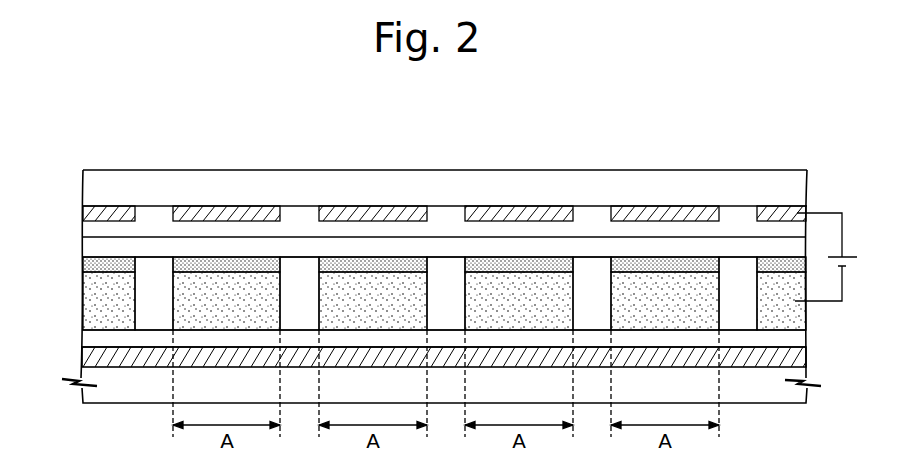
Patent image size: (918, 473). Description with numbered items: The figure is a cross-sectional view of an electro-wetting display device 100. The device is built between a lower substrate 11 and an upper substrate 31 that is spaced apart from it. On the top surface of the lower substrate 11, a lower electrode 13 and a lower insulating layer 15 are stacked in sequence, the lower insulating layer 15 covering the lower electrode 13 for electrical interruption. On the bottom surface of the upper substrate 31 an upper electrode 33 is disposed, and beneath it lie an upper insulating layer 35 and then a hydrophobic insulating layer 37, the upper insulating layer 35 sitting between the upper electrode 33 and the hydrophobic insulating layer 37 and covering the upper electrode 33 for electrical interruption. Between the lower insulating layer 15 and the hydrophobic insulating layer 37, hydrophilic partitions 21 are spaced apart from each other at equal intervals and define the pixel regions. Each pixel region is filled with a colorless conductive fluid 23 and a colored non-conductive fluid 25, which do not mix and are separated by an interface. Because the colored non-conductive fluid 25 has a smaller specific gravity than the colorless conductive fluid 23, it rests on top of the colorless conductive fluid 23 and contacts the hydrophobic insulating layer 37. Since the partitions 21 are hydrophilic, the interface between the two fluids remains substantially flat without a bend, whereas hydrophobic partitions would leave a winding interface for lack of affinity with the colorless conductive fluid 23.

The electro-wetting display device 100 is at (801, 108).
The lower substrate 11 is at (91, 397).
The lower electrode 13 is at (90, 360).
The lower insulating layer 15 is at (91, 340).
The hydrophilic partitions 21 is at (143, 312).
The colorless conductive fluid 23 is at (98, 293).
The colored non-conductive fluid 25 is at (84, 268).
The upper substrate 31 is at (93, 190).
The upper electrode 33 is at (92, 213).
The upper insulating layer 35 is at (86, 232).
The hydrophobic insulating layer 37 is at (86, 250).